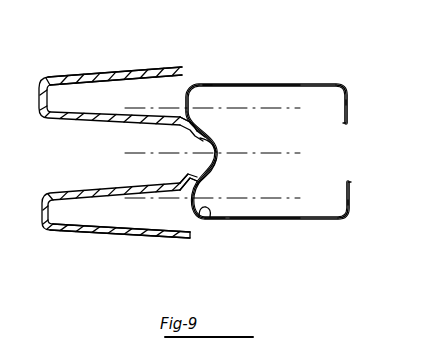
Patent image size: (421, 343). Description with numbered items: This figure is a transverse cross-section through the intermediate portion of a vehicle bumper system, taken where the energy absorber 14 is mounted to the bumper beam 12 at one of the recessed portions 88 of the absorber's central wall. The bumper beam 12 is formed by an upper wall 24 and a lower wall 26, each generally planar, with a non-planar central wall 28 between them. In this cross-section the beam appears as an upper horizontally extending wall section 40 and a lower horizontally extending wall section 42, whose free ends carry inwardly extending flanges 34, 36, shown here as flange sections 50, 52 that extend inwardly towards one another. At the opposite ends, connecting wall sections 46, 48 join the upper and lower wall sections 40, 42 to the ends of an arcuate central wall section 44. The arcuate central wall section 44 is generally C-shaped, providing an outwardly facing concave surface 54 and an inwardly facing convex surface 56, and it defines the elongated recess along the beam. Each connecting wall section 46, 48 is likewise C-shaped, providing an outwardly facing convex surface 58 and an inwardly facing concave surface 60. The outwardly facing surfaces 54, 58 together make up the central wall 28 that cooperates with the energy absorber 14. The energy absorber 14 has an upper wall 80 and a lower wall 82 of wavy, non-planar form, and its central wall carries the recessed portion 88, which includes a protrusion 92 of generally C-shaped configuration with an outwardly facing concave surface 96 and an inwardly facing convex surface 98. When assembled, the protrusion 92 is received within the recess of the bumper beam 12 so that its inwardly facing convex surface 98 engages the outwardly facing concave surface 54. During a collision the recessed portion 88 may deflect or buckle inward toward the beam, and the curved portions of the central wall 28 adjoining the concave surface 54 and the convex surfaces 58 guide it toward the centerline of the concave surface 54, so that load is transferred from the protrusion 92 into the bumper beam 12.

The bumper beam 12 is at (349, 83).
The energy absorber 14 is at (92, 66).
The upper wall 24 is at (262, 80).
The lower wall 26 is at (266, 229).
The central wall 28 is at (181, 208).
The inwardly extending flange 34 is at (351, 117).
The inwardly extending flange 36 is at (352, 188).
The upper horizontally extending wall section 40 is at (289, 84).
The lower horizontally extending wall section 42 is at (321, 221).
The arcuate central wall section 44 is at (215, 119).
The connecting wall section 46 is at (204, 91).
The connecting wall section 48 is at (211, 221).
The flange section 50 is at (351, 105).
The flange section 52 is at (353, 200).
The outwardly facing concave surface 54 is at (225, 136).
The inwardly facing convex surface 56 is at (216, 165).
The outwardly facing convex surface 58 is at (187, 76).
The inwardly facing concave surface 60 is at (214, 122).
The upper wall 80 is at (155, 60).
The lower wall 82 is at (85, 243).
The recessed portion 88 is at (82, 191).
The protrusion 92 is at (188, 132).
The outwardly facing concave surface 96 is at (198, 176).
The inwardly facing convex surface 98 is at (206, 181).